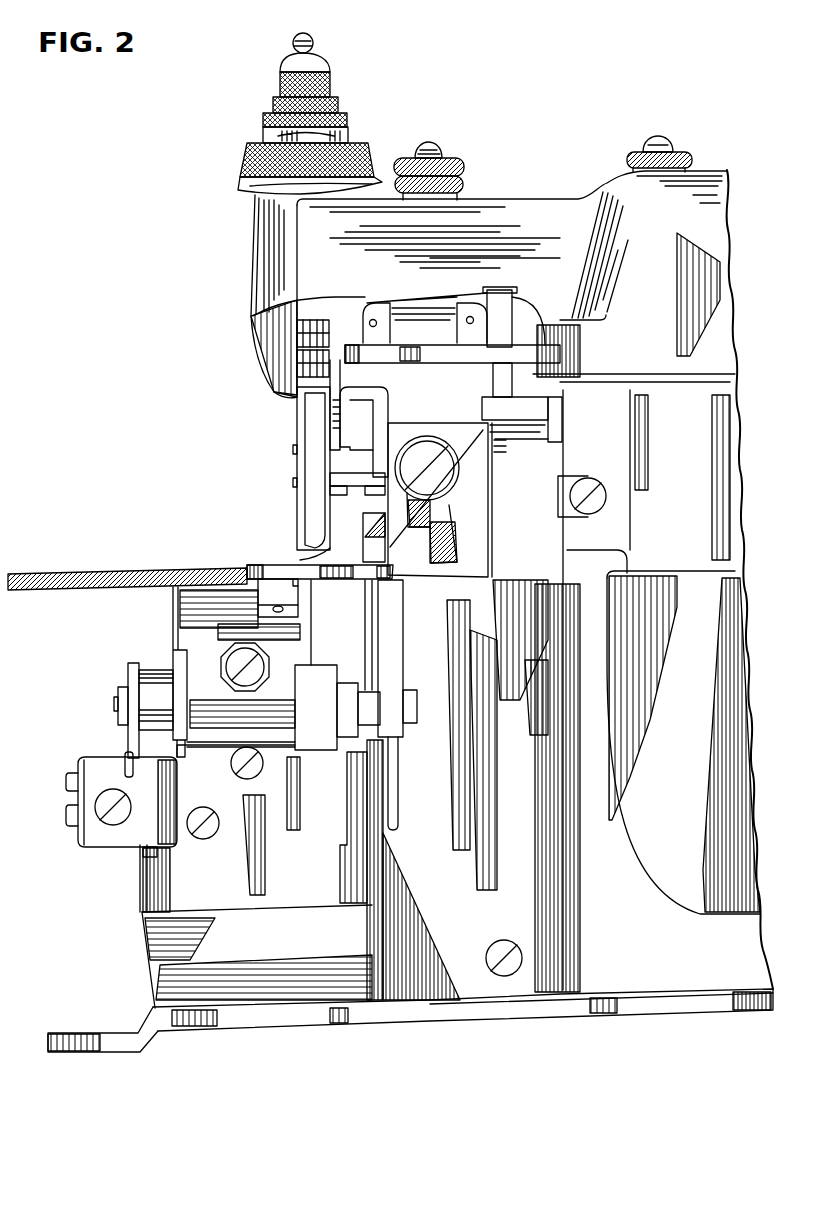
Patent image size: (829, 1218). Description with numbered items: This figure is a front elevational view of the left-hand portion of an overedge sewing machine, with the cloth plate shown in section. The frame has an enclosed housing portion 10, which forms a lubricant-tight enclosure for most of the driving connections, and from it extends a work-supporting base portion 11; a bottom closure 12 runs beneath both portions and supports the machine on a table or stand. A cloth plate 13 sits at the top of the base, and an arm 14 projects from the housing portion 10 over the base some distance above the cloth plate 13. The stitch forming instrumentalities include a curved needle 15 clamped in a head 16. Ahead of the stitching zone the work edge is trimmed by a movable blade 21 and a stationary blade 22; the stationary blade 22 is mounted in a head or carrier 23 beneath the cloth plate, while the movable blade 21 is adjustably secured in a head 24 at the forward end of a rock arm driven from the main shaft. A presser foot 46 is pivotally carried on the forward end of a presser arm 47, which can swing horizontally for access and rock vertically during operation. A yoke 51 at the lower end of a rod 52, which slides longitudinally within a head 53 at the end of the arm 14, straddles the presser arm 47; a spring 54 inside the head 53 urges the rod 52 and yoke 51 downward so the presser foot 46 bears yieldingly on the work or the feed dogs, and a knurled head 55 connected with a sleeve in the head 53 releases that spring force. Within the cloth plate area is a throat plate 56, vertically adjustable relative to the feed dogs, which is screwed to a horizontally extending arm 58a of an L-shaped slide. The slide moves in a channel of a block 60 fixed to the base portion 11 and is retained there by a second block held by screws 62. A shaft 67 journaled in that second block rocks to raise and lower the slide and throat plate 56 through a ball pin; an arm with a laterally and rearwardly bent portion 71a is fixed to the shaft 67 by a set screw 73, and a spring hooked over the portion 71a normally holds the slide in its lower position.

The enclosed housing portion 10 is at (697, 483).
The work-supporting base portion 11 is at (173, 966).
The bottom closure 12 is at (307, 1018).
The cloth plate 13 is at (110, 574).
The arm 14 is at (506, 220).
The curved needle 15 is at (358, 508).
The head 16 is at (373, 414).
The movable blade 21 is at (460, 503).
The stationary blade 22 is at (398, 764).
The head or carrier 23 is at (397, 666).
The head 24 is at (457, 433).
The presser foot 46 is at (357, 554).
The presser arm 47 is at (314, 457).
The yoke 51 is at (297, 412).
The rod 52 is at (308, 357).
The head 53 is at (260, 289).
The spring 54 is at (300, 348).
The knurled head 55 is at (247, 181).
The throat plate 56 is at (263, 570).
The horizontally extending arm 58a is at (262, 598).
The block 60 is at (182, 599).
The screws 62 is at (206, 814).
The shaft 67 is at (68, 813).
The laterally and rearwardly bent portion 71a is at (113, 766).
The set screw 73 is at (126, 807).